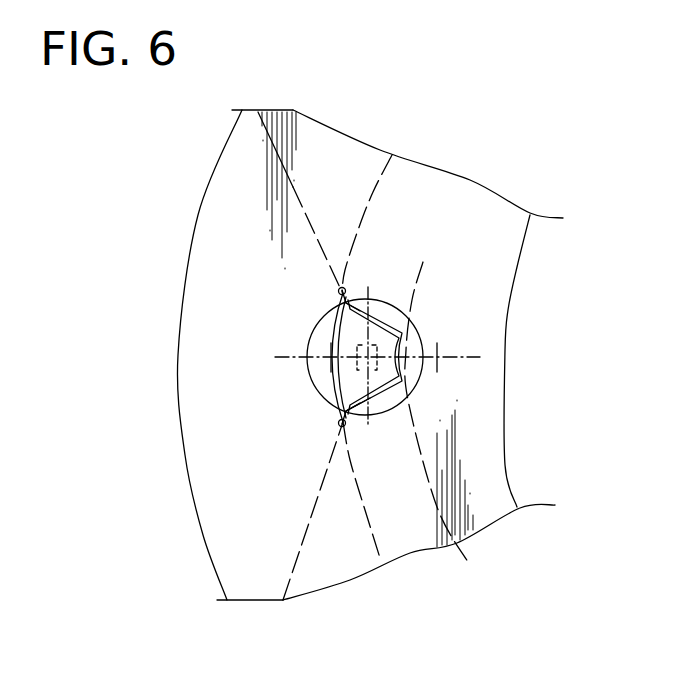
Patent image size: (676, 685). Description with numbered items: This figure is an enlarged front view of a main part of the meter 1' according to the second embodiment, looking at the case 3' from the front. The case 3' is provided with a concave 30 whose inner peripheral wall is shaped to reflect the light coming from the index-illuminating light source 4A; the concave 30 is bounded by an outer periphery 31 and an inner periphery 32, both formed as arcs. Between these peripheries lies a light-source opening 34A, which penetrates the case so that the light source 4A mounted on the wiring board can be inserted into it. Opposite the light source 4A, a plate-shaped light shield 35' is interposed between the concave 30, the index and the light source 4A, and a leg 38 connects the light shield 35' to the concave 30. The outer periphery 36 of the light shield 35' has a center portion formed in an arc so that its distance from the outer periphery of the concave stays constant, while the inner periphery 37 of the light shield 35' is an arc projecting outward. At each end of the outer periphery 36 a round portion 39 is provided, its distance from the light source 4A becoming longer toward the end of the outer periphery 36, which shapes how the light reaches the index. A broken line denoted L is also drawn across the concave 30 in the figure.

The meter 1' is at (323, 390).
The case 3' is at (322, 390).
The concave 30 is at (410, 178).
The outer periphery of the concave 31 is at (205, 547).
The inner periphery of the concave 32 is at (511, 470).
The light-source opening 34A is at (326, 352).
The light shield 35' is at (470, 356).
The outer periphery of the light shield 36 is at (337, 405).
The inner periphery of the light shield 37 is at (406, 353).
The leg 38 is at (338, 296).
The round portion 39 is at (340, 295).
The index-illuminating light source 4A is at (335, 363).
The reference line L is at (228, 495).